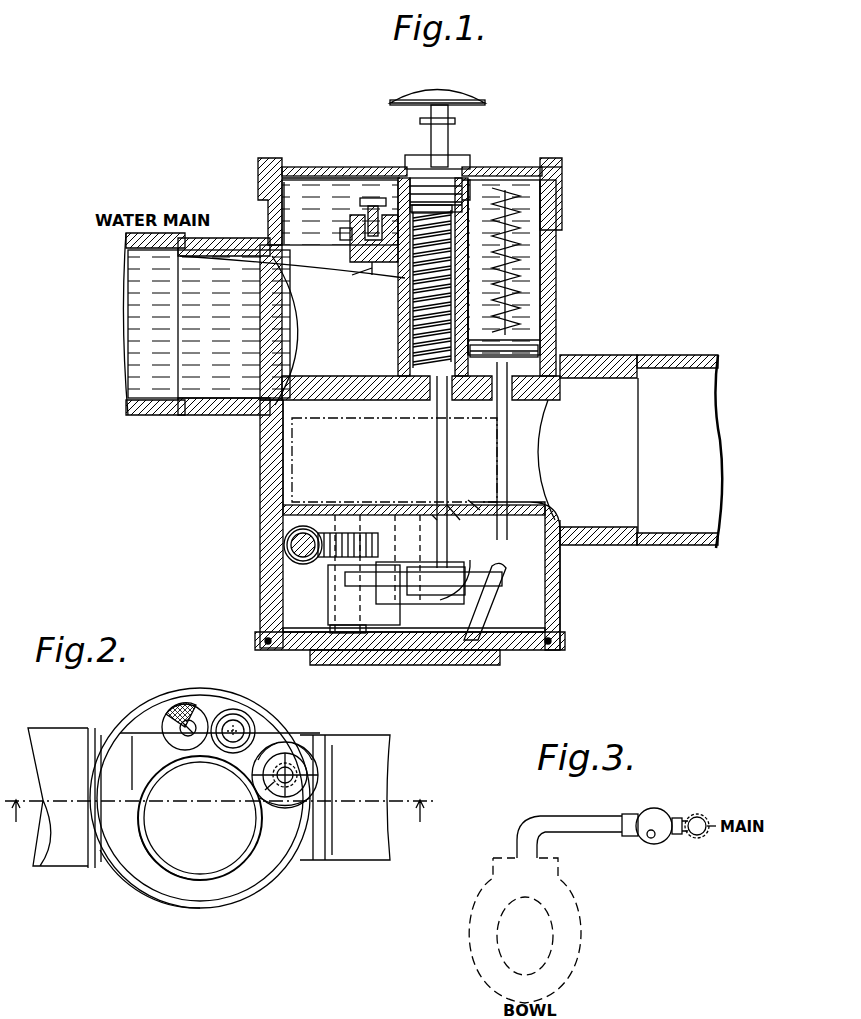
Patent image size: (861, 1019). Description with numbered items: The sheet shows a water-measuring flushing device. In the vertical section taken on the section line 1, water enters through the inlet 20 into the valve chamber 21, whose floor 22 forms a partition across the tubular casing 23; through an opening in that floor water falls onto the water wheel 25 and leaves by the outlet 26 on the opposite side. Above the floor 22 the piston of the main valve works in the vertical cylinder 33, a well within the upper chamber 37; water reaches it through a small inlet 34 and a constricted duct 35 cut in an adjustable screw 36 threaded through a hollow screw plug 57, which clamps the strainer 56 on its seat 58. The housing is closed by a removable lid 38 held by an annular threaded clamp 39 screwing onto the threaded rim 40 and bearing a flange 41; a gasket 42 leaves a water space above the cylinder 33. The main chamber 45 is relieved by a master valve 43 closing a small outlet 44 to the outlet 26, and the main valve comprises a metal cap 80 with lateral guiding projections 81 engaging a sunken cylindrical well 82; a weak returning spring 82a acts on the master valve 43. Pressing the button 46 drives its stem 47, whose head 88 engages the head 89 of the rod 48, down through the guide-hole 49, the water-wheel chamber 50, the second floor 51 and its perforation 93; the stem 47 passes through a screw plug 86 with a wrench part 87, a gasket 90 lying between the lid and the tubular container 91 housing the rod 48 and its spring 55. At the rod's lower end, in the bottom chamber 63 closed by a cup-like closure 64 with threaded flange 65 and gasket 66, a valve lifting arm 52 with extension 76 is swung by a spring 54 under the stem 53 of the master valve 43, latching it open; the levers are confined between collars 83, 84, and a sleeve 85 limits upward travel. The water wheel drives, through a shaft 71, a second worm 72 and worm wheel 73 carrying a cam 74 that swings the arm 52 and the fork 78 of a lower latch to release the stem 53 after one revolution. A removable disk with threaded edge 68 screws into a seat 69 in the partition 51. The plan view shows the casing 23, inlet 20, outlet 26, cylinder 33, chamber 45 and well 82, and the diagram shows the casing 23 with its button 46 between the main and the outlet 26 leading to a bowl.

In FIG. 2, the section line 1 is at (220, 822).
In FIG. 1, the inlet 20 is at (182, 380).
In FIG. 2, the inlet 20 is at (108, 862).
In FIG. 3, the inlet 20 is at (672, 818).
In FIG. 2, the valve chamber 21 is at (200, 818).
In FIG. 1, the floor 22 is at (364, 400).
In FIG. 1, the tubular housing or casing 23 is at (268, 232).
In FIG. 2, the tubular housing or casing 23 is at (165, 892).
In FIG. 3, the tubular housing or casing 23 is at (646, 836).
In FIG. 1, the water wheel 25 is at (288, 462).
In FIG. 1, the outlet 26 is at (626, 493).
In FIG. 2, the outlet 26 is at (318, 738).
In FIG. 3, the outlet 26 is at (630, 816).
In FIG. 2, the vertical cylinder 33 is at (228, 878).
In FIG. 1, the small inlet 34 is at (352, 276).
In FIG. 1, the duct or channel 35 is at (342, 232).
In FIG. 1, the screw 36 is at (372, 198).
In FIG. 2, the screw 36 is at (184, 736).
In FIG. 1, the upper chamber 37 is at (310, 180).
In FIG. 1, the removable lid 38 is at (325, 167).
In FIG. 1, the annular threaded clamp 39 is at (270, 172).
In FIG. 1, the threaded rim 40 is at (552, 214).
In FIG. 1, the flange 41 is at (288, 167).
In FIG. 1, the gasket 42 is at (548, 166).
In FIG. 1, the master valve 43 is at (540, 348).
In FIG. 1, the small outlet 44 is at (500, 386).
In FIG. 1, the main chamber 45 is at (288, 200).
In FIG. 2, the main chamber 45 is at (268, 878).
In FIG. 1, the button 46 is at (466, 100).
In FIG. 3, the button 46 is at (654, 838).
In FIG. 1, the stem 47 is at (448, 142).
In FIG. 1, the rod 48 is at (437, 464).
In FIG. 2, the rod 48 is at (224, 754).
In FIG. 1, the guide-hole 49 is at (414, 400).
In FIG. 1, the water-wheel chamber 50 is at (394, 460).
In FIG. 1, the floor of water-wheel chamber 51 is at (280, 492).
In FIG. 1, the valve lifting arm 52 is at (470, 560).
In FIG. 1, the vertical stem 53 is at (542, 258).
In FIG. 2, the vertical stem 53 is at (284, 788).
In FIG. 1, the spring 54 is at (486, 606).
In FIG. 1, the spring 55 is at (400, 318).
In FIG. 1, the strainer 56 is at (372, 278).
In FIG. 2, the strainer 56 is at (170, 716).
In FIG. 1, the hollow screw plug 57 is at (362, 200).
In FIG. 2, the hollow screw plug 57 is at (178, 740).
In FIG. 1, the seat 58 is at (345, 272).
In FIG. 1, the bottom chamber 63 is at (552, 604).
In FIG. 1, the cup-like closure 64 is at (528, 650).
In FIG. 1, the threaded flange 65 is at (560, 636).
In FIG. 1, the gasket 66 is at (492, 650).
In FIG. 1, the threaded edge 68 is at (476, 508).
In FIG. 1, the seat 69 is at (300, 506).
In FIG. 1, the shaft 71 is at (286, 540).
In FIG. 1, the second worm 72 is at (296, 560).
In FIG. 1, the second worm wheel 73 is at (378, 548).
In FIG. 1, the cam device 74 is at (330, 610).
In FIG. 1, the projection or extension 76 is at (380, 572).
In FIG. 1, the fork 78 is at (372, 586).
In FIG. 1, the metal cap 80 is at (515, 348).
In FIG. 2, the metal cap 80 is at (302, 770).
In FIG. 2, the lateral guiding projections 81 is at (270, 782).
In FIG. 1, the sunken cylindrical well 82 is at (530, 298).
In FIG. 2, the sunken cylindrical well 82 is at (282, 742).
In FIG. 1, the weak returning spring 82a is at (512, 214).
In FIG. 1, the collar 83 is at (458, 584).
In FIG. 1, the collar 84 is at (412, 597).
In FIG. 1, the sleeve 85 is at (435, 530).
In FIG. 1, the screw plug 86 is at (418, 178).
In FIG. 1, the wrench part 87 is at (462, 160).
In FIG. 1, the head 88 is at (440, 116).
In FIG. 1, the head 89 is at (468, 186).
In FIG. 1, the gasket 90 is at (412, 200).
In FIG. 1, the tubular container 91 is at (410, 350).
In FIG. 2, the tubular container 91 is at (233, 709).
In FIG. 1, the guiding perforation 93 is at (460, 519).